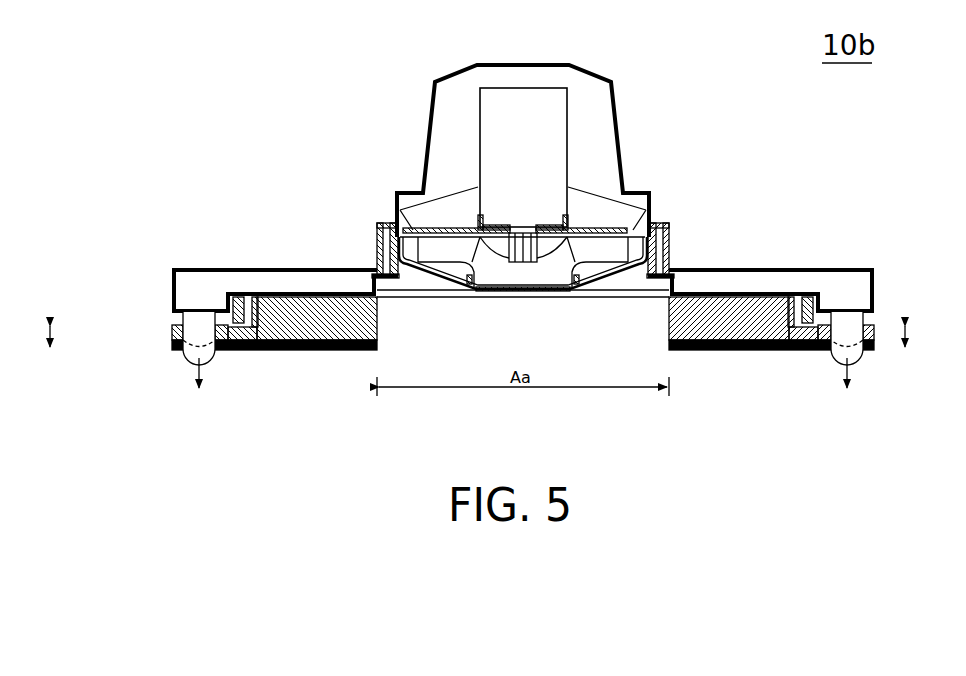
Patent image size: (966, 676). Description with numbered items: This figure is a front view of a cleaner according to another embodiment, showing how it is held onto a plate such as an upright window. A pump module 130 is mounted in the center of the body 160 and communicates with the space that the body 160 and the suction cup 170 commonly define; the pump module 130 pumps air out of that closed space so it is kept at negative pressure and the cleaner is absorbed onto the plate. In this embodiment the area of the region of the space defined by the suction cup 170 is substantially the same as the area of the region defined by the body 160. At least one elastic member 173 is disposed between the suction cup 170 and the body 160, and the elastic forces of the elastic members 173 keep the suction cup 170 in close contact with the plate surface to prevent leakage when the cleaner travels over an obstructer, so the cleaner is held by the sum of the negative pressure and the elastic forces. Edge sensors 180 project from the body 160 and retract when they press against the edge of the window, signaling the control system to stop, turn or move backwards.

The pump module 130 is at (493, 148).
The body 160 is at (192, 295).
The suction cup 170 is at (173, 334).
The elastic member 173 is at (243, 293).
The edge sensor 180 is at (190, 356).